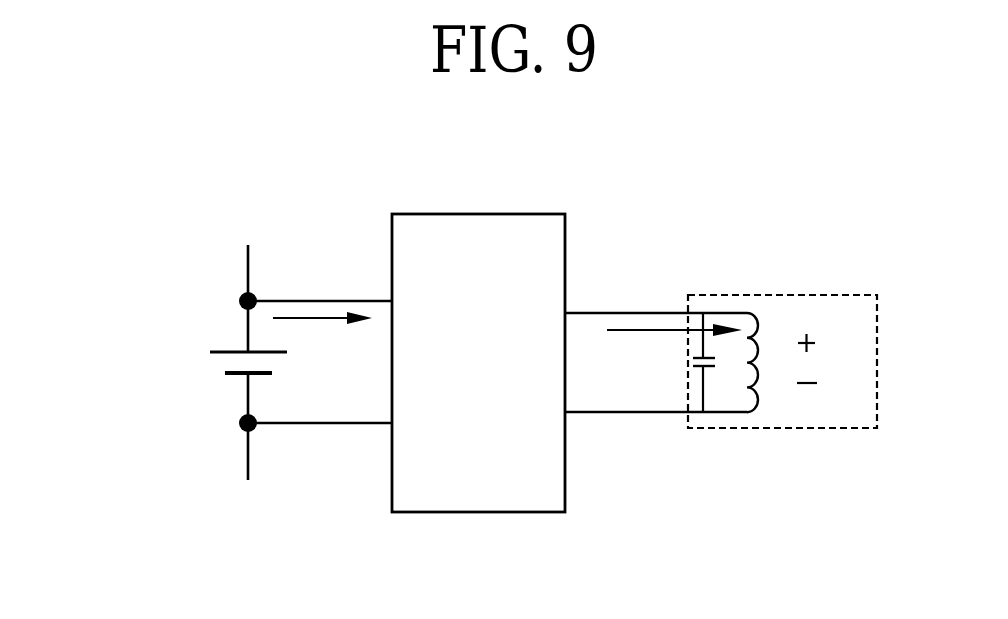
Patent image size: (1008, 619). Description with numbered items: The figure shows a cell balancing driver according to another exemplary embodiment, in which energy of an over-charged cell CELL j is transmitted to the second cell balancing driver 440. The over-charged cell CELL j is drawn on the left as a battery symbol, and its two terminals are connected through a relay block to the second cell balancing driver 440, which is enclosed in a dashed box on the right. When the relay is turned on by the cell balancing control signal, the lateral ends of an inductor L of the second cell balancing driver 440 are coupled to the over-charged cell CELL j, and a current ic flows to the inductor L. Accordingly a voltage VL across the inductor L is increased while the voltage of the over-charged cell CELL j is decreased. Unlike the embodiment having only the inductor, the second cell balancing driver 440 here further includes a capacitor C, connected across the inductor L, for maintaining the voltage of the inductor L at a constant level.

The second cell balancing driver 440 is at (782, 329).
The capacitor C is at (711, 362).
The inductor L is at (771, 362).
The voltage VL is at (829, 359).
The current ic is at (674, 346).
The over-charged cell CELL j is at (205, 360).